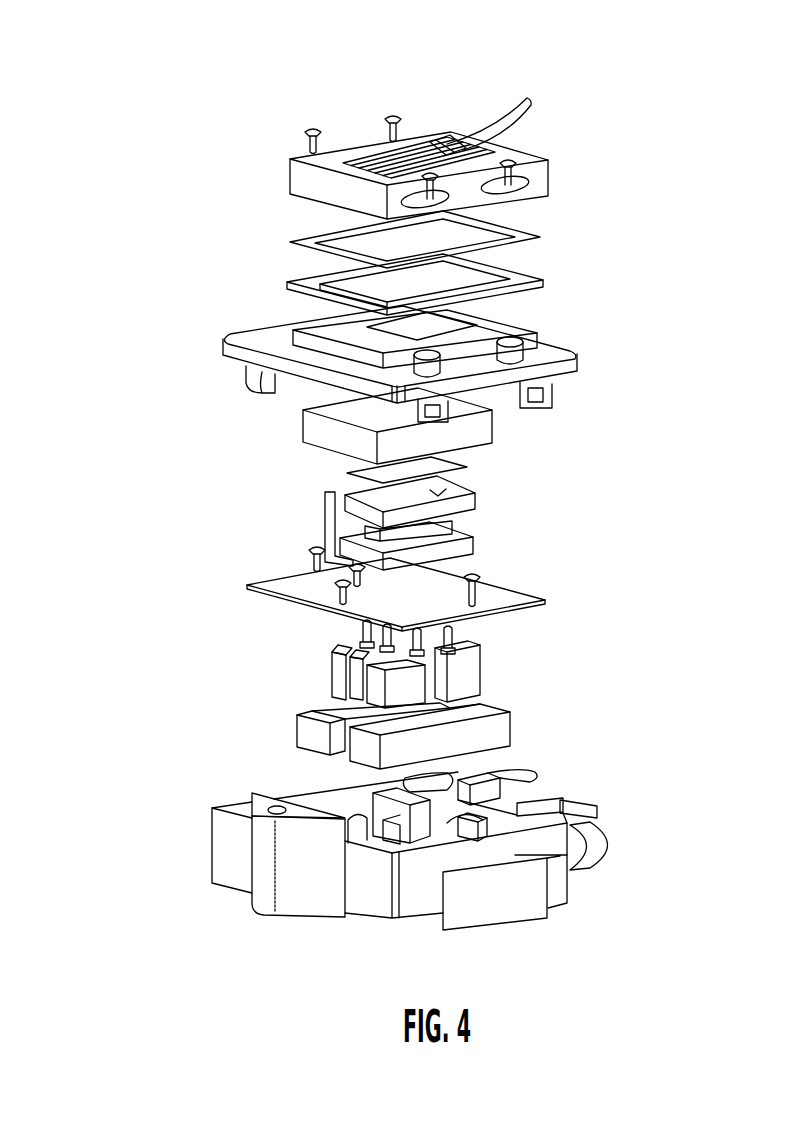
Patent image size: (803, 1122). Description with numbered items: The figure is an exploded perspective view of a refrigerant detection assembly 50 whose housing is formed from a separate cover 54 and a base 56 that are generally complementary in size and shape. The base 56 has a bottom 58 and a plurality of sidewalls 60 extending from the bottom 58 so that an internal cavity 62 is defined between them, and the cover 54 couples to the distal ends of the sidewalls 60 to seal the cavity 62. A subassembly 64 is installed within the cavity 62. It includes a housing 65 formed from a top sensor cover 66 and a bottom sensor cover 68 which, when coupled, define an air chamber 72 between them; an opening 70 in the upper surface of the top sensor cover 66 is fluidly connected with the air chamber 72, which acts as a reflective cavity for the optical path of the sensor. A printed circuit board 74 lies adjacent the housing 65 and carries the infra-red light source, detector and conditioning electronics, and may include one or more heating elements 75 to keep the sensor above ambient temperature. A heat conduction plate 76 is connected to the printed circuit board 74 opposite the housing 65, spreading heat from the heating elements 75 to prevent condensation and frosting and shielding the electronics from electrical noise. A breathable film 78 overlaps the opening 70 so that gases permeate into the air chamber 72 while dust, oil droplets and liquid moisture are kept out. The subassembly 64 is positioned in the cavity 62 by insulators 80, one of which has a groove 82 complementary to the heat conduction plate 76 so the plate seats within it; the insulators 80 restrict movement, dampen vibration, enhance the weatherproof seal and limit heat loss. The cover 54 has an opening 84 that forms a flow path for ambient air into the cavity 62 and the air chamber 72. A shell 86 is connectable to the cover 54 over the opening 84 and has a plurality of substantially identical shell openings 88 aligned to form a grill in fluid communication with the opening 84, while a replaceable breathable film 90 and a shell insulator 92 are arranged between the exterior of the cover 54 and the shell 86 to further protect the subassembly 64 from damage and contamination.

The refrigerant detection assembly 50 is at (147, 65).
The cover 54 is at (238, 345).
The base 56 is at (205, 885).
The bottom 58 is at (370, 922).
The sidewalls 60 is at (233, 843).
The internal cavity 62 is at (600, 820).
The subassembly 64 is at (205, 407).
The housing 65 is at (332, 526).
The top sensor cover 66 is at (460, 505).
The bottom sensor cover 68 is at (450, 553).
The opening 70 is at (440, 483).
The air chamber 72 is at (452, 522).
The printed circuit board 74 is at (307, 595).
The heating elements 75 is at (403, 584).
The heat conduction plate 76 is at (463, 666).
The breathable film 78 is at (365, 473).
The insulator 80 is at (453, 440).
The groove 82 is at (470, 712).
The opening 84 is at (500, 337).
The shell 86 is at (320, 190).
The shell opening 88 is at (527, 98).
The breathable film 90 is at (353, 243).
The shell insulator 92 is at (320, 294).